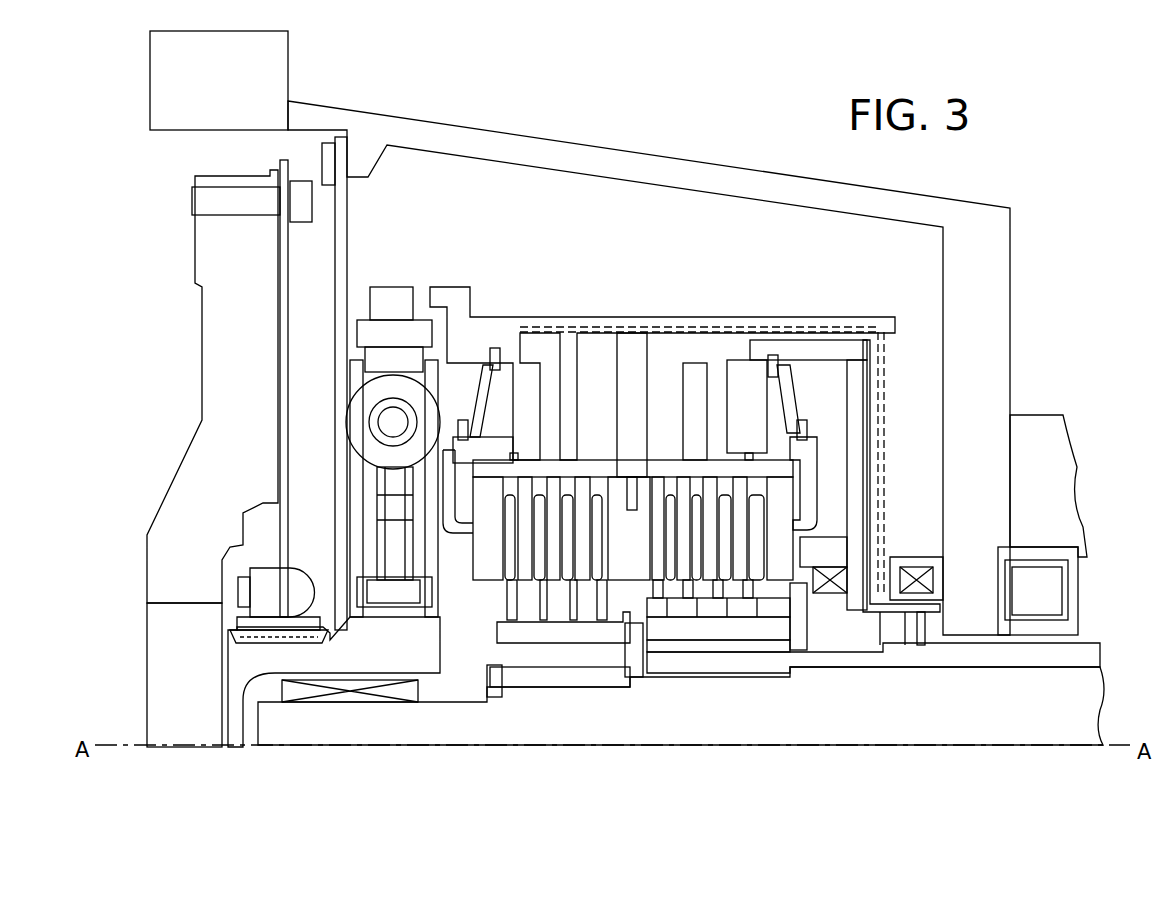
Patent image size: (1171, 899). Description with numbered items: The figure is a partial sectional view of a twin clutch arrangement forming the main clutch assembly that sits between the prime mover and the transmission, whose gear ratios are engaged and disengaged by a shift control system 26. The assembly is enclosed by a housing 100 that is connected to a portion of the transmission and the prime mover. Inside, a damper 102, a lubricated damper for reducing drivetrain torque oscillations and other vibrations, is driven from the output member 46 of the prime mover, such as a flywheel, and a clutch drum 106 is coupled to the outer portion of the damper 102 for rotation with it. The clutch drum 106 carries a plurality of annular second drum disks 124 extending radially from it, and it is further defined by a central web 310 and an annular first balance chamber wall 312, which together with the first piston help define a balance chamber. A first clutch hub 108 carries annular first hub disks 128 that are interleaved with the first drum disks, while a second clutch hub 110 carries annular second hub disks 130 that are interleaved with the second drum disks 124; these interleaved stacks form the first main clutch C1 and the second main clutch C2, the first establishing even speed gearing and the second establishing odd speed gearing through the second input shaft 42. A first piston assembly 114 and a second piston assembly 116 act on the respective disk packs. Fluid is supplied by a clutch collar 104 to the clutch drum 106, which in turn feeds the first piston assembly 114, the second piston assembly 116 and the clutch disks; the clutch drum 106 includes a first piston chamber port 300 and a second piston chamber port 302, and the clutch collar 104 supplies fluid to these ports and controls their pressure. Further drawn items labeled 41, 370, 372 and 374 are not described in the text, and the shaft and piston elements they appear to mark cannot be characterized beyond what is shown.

The housing 100 is at (270, 80).
The output member 46 is at (233, 378).
The damper 102 is at (350, 385).
The first clutch hub 108 is at (490, 640).
The shaft 41 is at (1068, 698).
The second input shaft 42 is at (1085, 654).
The first piston chamber port 300 is at (538, 340).
The first piston assembly 114 is at (488, 400).
The first balance chamber wall 312 is at (586, 476).
The central web 310 is at (634, 345).
The second drum disks 124 is at (673, 476).
The first hub disks 128 is at (498, 594).
The clutch drum 106 is at (708, 325).
The second piston chamber port 302 is at (773, 400).
The second piston assembly 116 is at (866, 338).
The shift control system 26 is at (1053, 468).
The piston 370 is at (497, 687).
The second clutch hub 110 is at (643, 617).
The piston plate 372 is at (638, 663).
The piston element 374 is at (798, 633).
The clutch collar 104 is at (918, 612).
The second hub disks 130 is at (820, 518).
The first main clutch C1 is at (467, 543).
The second main clutch C2 is at (762, 590).